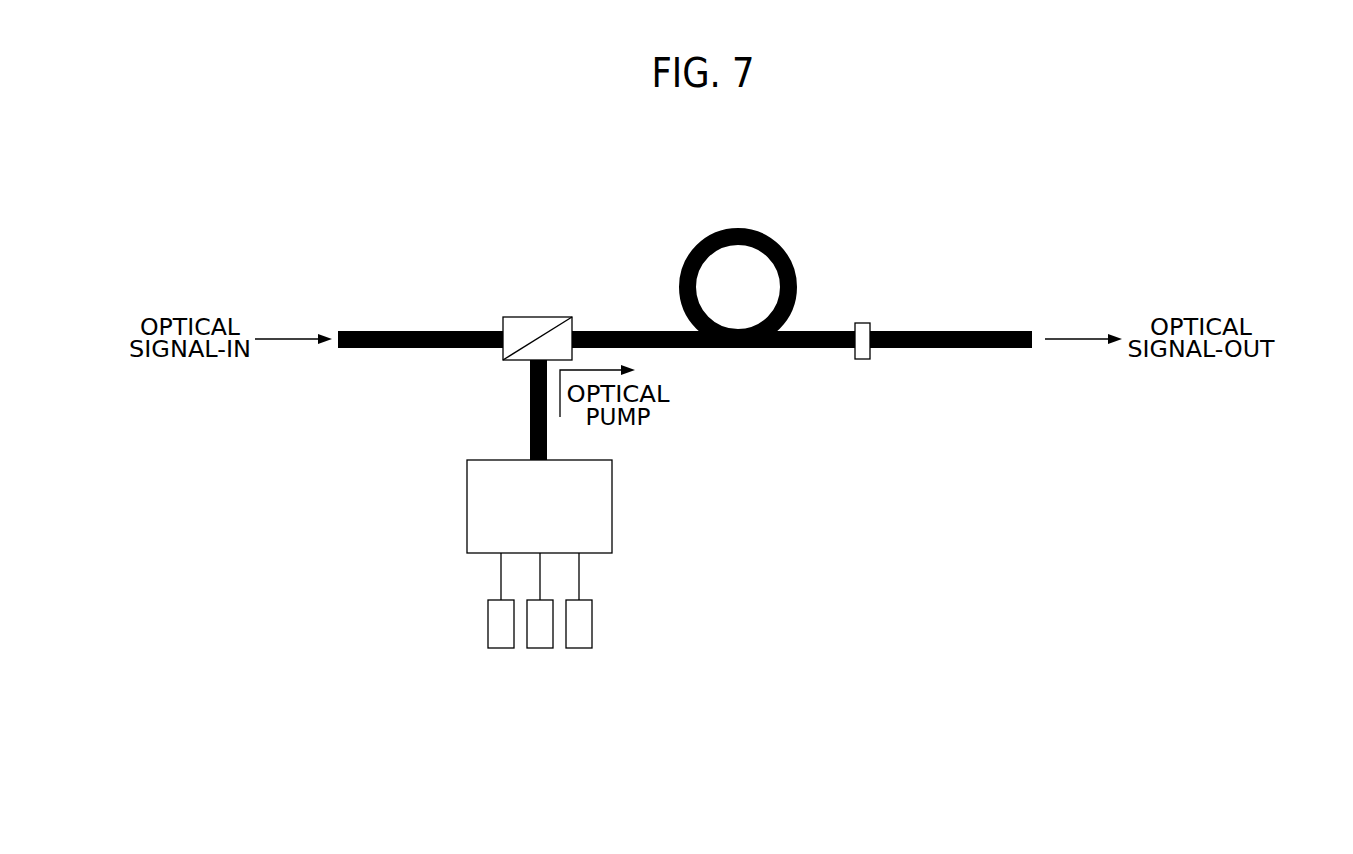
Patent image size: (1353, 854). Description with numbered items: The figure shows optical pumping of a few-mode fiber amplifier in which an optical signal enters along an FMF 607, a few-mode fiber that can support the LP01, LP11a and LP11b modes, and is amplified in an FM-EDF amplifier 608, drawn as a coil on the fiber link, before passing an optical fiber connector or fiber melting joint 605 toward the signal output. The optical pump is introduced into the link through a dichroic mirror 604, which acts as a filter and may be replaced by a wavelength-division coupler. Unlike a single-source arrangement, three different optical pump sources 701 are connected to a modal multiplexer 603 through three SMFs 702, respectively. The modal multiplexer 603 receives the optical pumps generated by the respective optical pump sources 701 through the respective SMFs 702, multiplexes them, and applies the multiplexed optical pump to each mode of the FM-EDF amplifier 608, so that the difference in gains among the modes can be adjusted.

The modal multiplexer 603 is at (467, 504).
The dichroic mirror 604 is at (538, 318).
The optical fiber connector 605 is at (860, 360).
The FMF 607 is at (380, 331).
The FM-EDF amplifier 608 is at (781, 244).
The optical pump sources 701 is at (579, 648).
The SMFs 702 is at (501, 591).